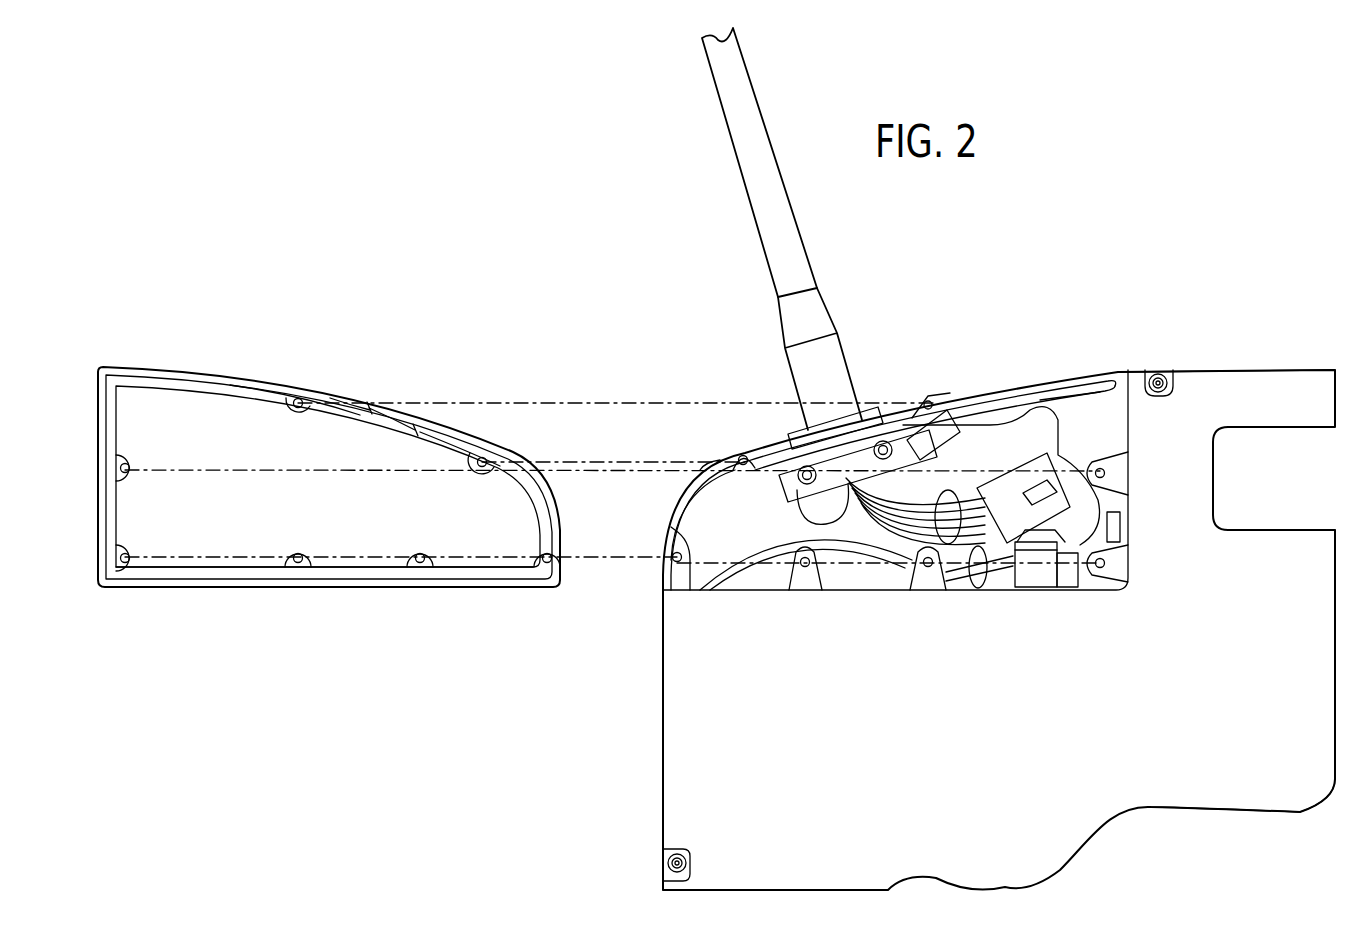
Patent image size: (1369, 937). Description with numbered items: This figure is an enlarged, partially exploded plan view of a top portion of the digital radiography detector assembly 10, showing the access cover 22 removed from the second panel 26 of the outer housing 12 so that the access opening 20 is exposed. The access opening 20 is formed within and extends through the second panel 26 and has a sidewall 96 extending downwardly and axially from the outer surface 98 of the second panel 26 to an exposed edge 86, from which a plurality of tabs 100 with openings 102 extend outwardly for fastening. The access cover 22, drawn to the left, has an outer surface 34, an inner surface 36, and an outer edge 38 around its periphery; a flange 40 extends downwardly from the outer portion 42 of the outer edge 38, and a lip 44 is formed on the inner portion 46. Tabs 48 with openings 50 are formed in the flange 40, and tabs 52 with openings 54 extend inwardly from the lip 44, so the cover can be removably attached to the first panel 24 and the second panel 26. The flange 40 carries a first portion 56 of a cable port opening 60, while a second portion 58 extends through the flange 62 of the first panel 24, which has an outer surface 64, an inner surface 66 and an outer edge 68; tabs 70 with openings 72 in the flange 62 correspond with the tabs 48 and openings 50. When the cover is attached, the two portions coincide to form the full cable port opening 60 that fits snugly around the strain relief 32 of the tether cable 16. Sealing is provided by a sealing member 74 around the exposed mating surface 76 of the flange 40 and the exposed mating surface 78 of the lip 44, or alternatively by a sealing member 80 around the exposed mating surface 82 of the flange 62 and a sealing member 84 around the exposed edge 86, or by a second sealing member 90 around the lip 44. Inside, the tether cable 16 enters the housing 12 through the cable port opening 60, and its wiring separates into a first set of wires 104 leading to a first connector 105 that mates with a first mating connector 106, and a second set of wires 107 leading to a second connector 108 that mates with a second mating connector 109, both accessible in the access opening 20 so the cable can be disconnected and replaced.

The digital radiography detector assembly 10 is at (1092, 309).
The outer housing 12 is at (668, 640).
The tether cable 16 is at (781, 228).
The access opening 20 is at (1085, 405).
The access cover 22 is at (170, 398).
The first panel 24 is at (1045, 395).
The second panel 26 is at (1332, 650).
The strain relief 32 is at (837, 332).
The outer surface 34 is at (247, 378).
The inner surface 36 is at (160, 547).
The outer edge 38 is at (440, 427).
The flange 40 is at (140, 367).
The outer portion 42 is at (160, 375).
The lip 44 is at (243, 588).
The inner portion 46 is at (192, 588).
The tabs 48 is at (293, 397).
The openings 50 is at (482, 453).
The tabs 52 is at (433, 560).
The openings 54 is at (297, 567).
The first portion of cable port opening 56 is at (382, 410).
The second portion of cable port opening 58 is at (793, 415).
The cable port opening 60 is at (405, 417).
The flange 62 is at (1000, 385).
The outer surface 64 is at (958, 393).
The inner surface 66 is at (693, 520).
The outer edge 68 is at (690, 462).
The tabs 70 is at (663, 568).
The openings 72 is at (743, 455).
The sealing member 74 is at (223, 372).
The exposed mating surface 76 is at (423, 437).
The exposed mating surface 78 is at (513, 588).
The sealing member 80 is at (710, 465).
The exposed mating surface 82 is at (905, 407).
The sealing member 84 is at (893, 590).
The exposed edge 86 is at (750, 591).
The second sealing member 90 is at (108, 518).
The sidewall 96 is at (876, 591).
The outer surface 98 is at (1162, 805).
The tabs 100 is at (950, 582).
The openings 102 is at (805, 567).
The first set of wires 104 is at (942, 483).
The first connector 105 is at (1028, 473).
The first mating connector 106 is at (1047, 460).
The second set of wires 107 is at (980, 588).
The second connector 108 is at (1040, 580).
The second mating connector 109 is at (1073, 566).